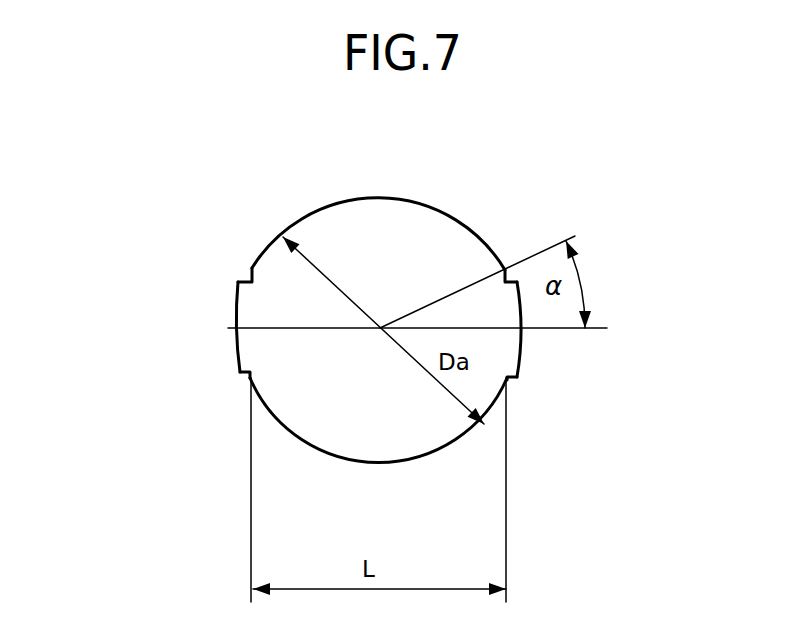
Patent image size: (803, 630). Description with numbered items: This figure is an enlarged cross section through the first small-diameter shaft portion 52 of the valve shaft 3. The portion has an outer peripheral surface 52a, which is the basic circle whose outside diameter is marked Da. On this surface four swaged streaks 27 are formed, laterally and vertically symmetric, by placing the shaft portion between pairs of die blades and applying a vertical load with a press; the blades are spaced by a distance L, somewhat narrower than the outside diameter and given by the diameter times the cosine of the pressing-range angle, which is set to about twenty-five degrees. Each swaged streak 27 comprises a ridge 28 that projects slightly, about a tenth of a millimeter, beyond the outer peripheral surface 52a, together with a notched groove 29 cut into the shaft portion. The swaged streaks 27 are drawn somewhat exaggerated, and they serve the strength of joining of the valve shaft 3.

The valve shaft 3 is at (403, 304).
The first small-diameter shaft portion 52 is at (403, 304).
The outer peripheral surface 52a is at (368, 198).
The swaged streaks 27 is at (237, 282).
The ridges 28 is at (403, 356).
The notched grooves 29 is at (518, 278).